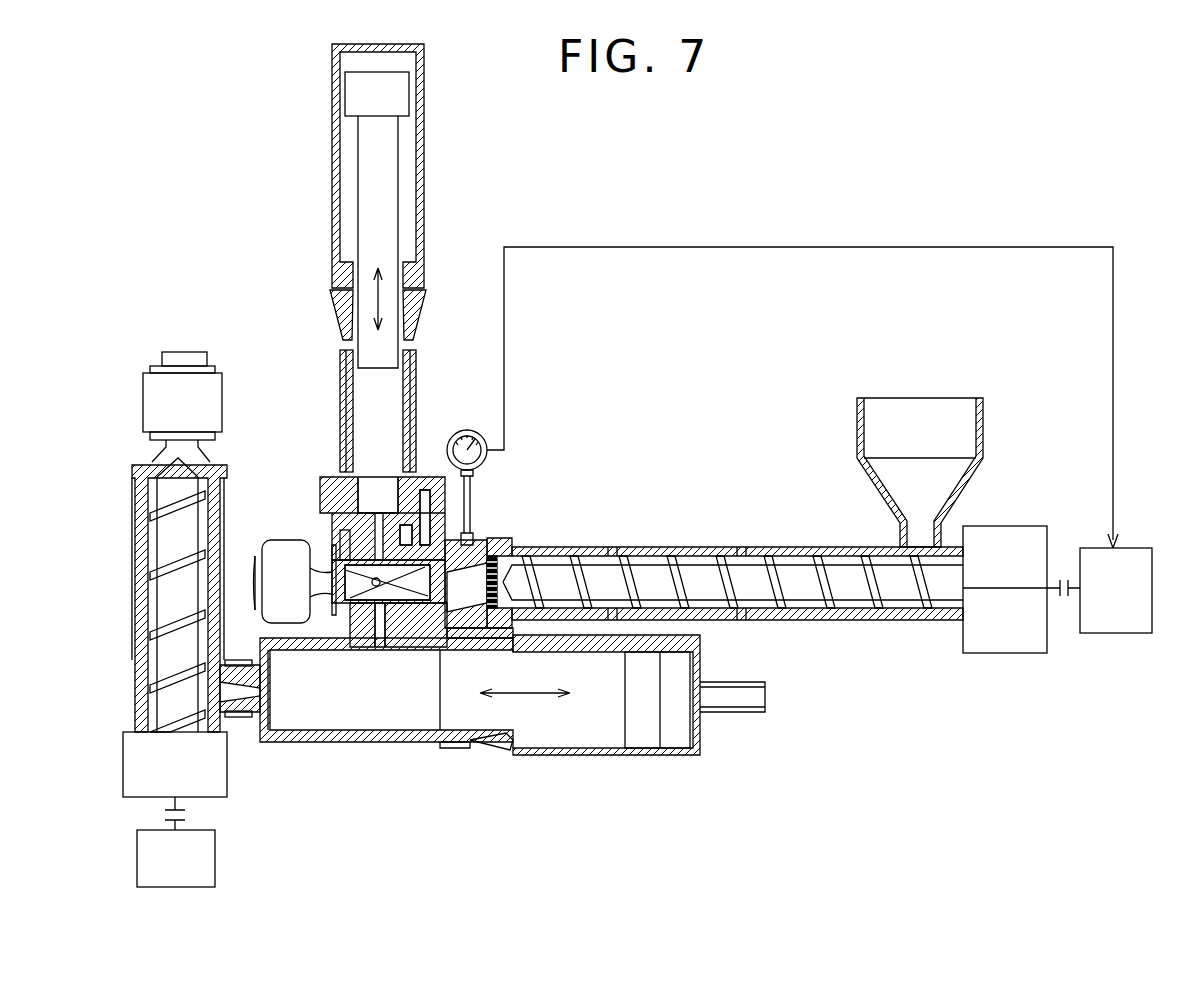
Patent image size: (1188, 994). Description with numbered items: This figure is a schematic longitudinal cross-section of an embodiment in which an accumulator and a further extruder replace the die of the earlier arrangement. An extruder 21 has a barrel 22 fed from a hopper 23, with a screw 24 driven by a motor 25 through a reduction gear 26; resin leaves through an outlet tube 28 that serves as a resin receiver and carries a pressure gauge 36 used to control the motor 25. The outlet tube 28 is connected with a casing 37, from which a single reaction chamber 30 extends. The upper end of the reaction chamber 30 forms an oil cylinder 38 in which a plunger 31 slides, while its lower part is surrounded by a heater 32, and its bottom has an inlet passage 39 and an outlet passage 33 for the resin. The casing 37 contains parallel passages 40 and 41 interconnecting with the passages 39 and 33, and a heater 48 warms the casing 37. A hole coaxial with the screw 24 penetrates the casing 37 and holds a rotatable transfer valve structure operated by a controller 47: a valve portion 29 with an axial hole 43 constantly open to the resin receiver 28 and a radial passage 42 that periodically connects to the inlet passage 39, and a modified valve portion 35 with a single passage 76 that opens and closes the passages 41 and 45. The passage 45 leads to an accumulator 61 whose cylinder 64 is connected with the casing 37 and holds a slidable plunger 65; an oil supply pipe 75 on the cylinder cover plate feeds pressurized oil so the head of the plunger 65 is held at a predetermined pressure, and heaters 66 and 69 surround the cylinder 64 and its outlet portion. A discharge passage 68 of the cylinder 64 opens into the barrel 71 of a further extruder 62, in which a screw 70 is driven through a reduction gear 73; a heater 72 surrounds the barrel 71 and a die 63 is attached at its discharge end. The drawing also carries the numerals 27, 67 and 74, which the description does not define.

The extruder 21 is at (826, 624).
The barrel 22 is at (760, 547).
The hopper 23 is at (910, 408).
The screw 24 is at (681, 566).
The motor 25 is at (1145, 586).
The reduction gear 26 is at (998, 540).
The heater bands 27 is at (814, 548).
The outlet tube 28 is at (467, 584).
The valve portion 29 is at (398, 625).
The reaction chamber 30 is at (343, 412).
The plunger 31 is at (366, 175).
The heater 32 is at (343, 440).
The outlet passage 33 is at (377, 513).
The valve portion 35 is at (345, 585).
The pressure gauge 36 is at (448, 432).
The casing 37 is at (332, 512).
The oil cylinder 38 is at (422, 174).
The inlet passage 39 is at (418, 490).
The parallel passage 40 is at (446, 515).
The parallel passage 41 is at (324, 486).
The radial passage 42 is at (495, 545).
The axial hole 43 is at (477, 628).
The passage 45 is at (380, 645).
The controller 47 is at (262, 567).
The heater 48 is at (342, 538).
The accumulator 61 is at (441, 754).
The further extruder 62 is at (129, 673).
The die 63 is at (220, 398).
The cylinder 64 is at (456, 743).
The plunger 65 is at (496, 736).
The heater 66 is at (352, 743).
The injection piston 67 is at (654, 748).
The discharge passage 68 is at (262, 690).
The heater 69 is at (235, 718).
The screw 70 is at (165, 580).
The barrel 71 is at (134, 510).
The heater 72 is at (133, 632).
The reduction gear 73 is at (124, 764).
The drive motor 74 is at (138, 860).
The oil supply pipe 75 is at (734, 713).
The passage 76 is at (350, 606).